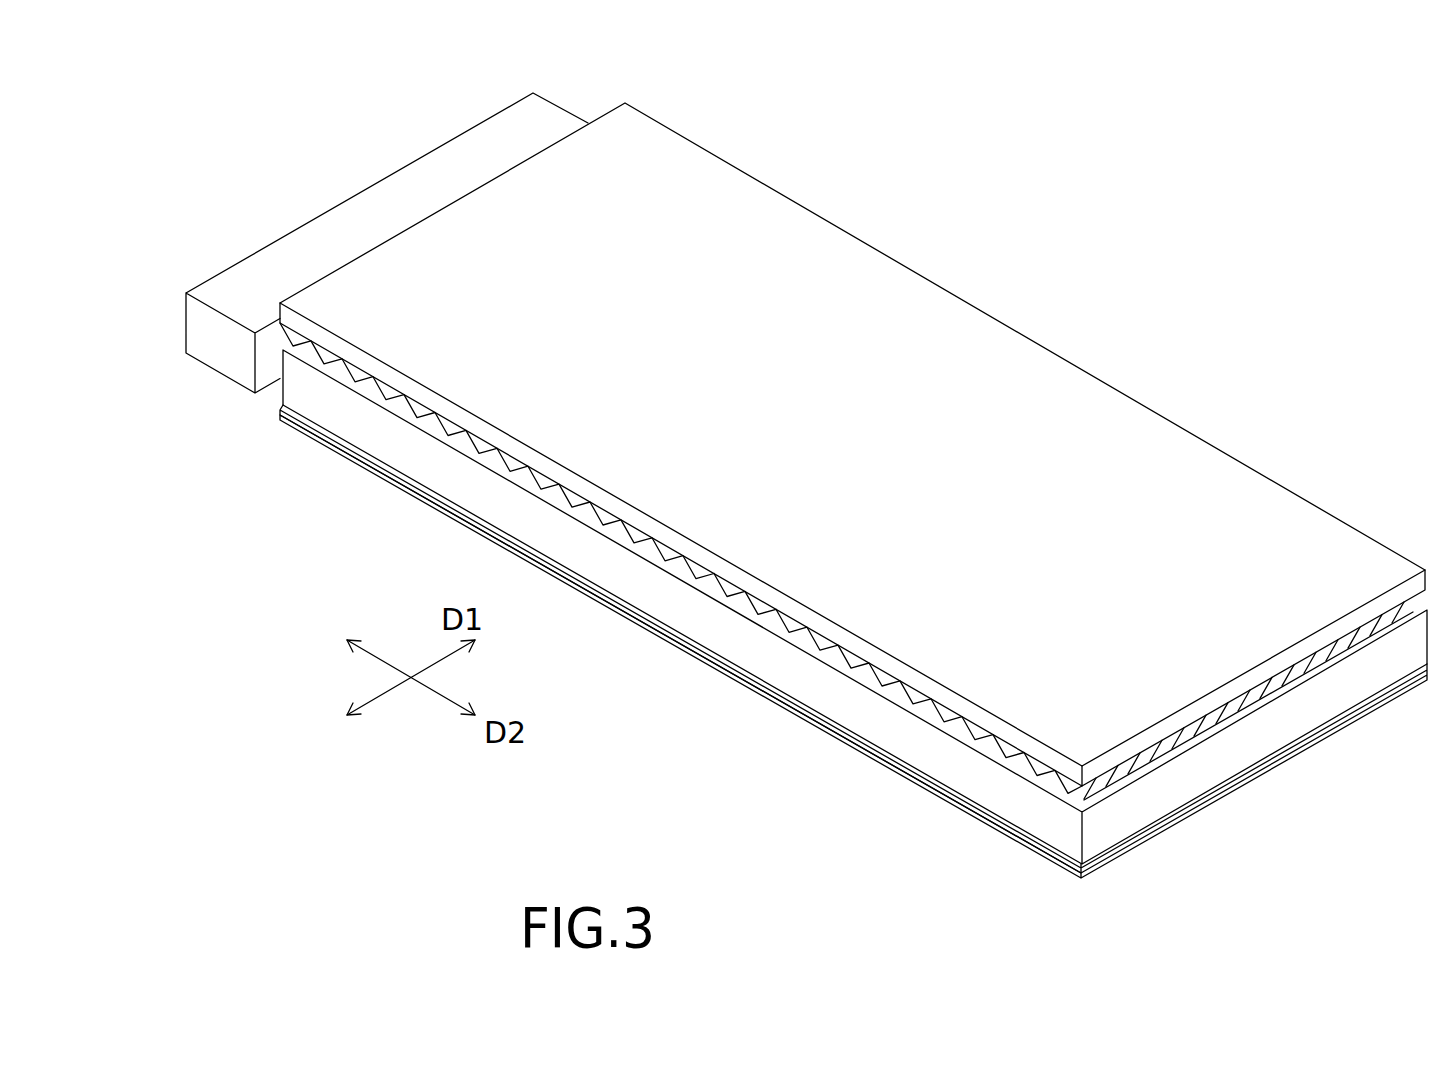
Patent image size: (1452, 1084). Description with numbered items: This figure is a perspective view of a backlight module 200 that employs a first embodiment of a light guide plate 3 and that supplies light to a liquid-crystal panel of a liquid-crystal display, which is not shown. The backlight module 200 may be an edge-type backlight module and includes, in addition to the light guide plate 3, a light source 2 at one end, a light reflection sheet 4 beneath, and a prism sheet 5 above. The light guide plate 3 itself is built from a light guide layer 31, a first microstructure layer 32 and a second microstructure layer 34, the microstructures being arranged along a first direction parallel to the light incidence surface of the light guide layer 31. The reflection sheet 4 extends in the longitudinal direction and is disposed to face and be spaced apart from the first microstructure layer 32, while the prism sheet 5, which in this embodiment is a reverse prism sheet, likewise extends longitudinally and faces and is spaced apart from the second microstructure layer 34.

The backlight module 200 is at (205, 83).
The light source 2 is at (272, 272).
The light guide plate 3 is at (853, 619).
The light guide layer 31 is at (1113, 823).
The first microstructure layer 32 is at (1043, 843).
The second microstructure layer 34 is at (1067, 793).
The light reflection sheet 4 is at (370, 468).
The prism sheet 5 is at (697, 190).